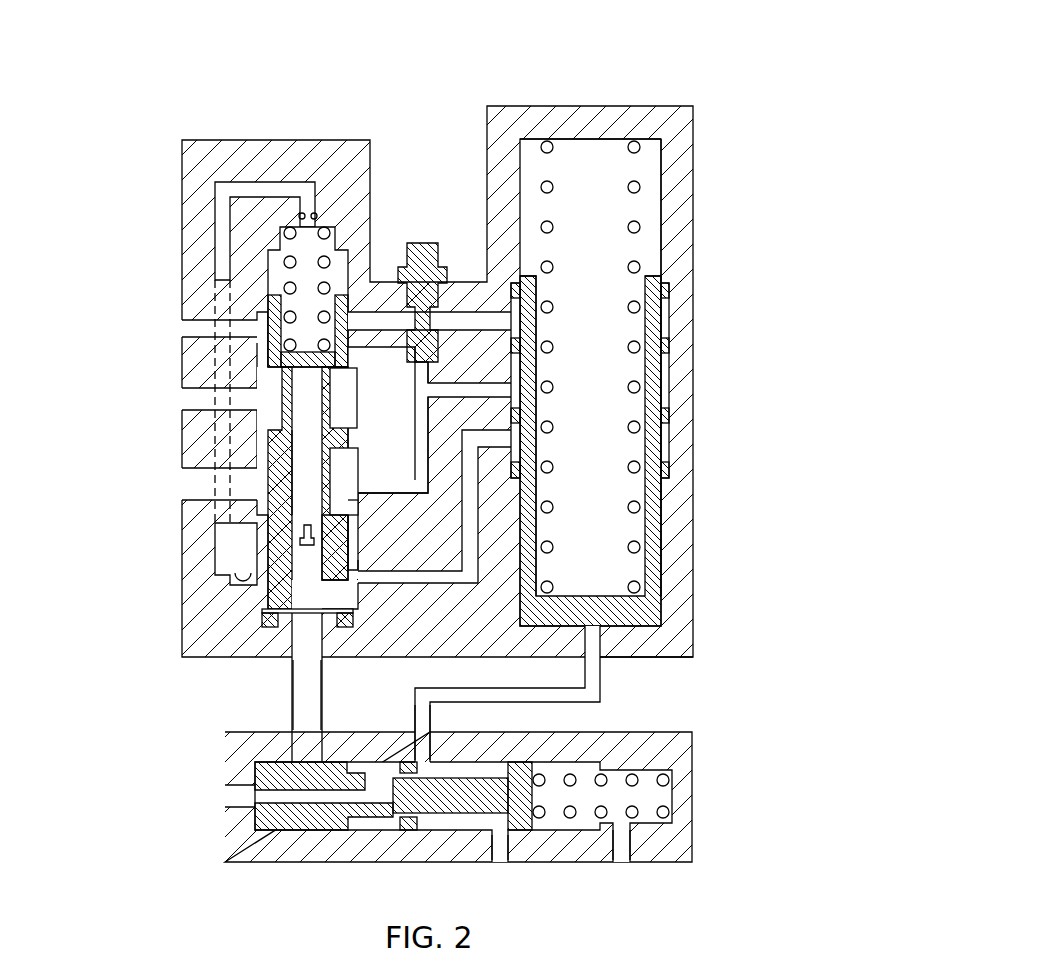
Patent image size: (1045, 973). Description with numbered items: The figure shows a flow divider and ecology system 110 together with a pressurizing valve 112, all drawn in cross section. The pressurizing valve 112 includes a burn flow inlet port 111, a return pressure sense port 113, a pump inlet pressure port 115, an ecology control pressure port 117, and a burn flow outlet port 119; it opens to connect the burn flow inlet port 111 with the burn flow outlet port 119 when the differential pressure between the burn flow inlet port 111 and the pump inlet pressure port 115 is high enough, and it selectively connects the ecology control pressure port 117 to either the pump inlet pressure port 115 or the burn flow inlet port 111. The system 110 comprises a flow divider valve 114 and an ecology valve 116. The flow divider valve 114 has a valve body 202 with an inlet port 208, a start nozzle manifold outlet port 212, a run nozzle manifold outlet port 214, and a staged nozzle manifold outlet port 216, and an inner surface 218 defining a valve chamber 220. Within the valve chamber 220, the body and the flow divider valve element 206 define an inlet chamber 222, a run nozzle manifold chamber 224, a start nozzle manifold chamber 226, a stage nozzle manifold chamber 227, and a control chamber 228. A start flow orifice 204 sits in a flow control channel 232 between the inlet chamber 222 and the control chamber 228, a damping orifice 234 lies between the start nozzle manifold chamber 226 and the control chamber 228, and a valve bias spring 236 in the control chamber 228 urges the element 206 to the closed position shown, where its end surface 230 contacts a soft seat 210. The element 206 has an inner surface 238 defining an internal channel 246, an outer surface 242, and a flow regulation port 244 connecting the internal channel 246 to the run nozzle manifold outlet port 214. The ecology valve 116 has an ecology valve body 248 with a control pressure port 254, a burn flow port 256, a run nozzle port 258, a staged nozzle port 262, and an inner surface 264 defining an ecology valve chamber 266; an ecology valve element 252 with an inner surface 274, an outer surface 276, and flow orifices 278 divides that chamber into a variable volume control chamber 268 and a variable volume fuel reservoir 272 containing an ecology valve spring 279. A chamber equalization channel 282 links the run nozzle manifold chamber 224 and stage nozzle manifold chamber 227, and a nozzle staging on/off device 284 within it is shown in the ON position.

The flow divider and ecology system 110 is at (442, 71).
The burn flow inlet port 111 is at (225, 796).
The pressurizing valve 112 is at (220, 748).
The return pressure sense port 113 is at (622, 862).
The flow divider valve 114 is at (216, 133).
The pump inlet pressure port 115 is at (500, 862).
The ecology valve 116 is at (638, 101).
The ecology control pressure port 117 is at (430, 745).
The burn flow outlet port 119 is at (322, 745).
The valve body 202 is at (182, 190).
The start flow orifice 204 is at (243, 588).
The flow divider valve element 206 is at (348, 447).
The inlet port 208 is at (312, 650).
The soft seat 210 is at (265, 622).
The start nozzle manifold outlet port 212 is at (182, 399).
The run nozzle manifold outlet port 214 is at (182, 484).
The staged nozzle manifold outlet port 216 is at (182, 328).
The inner surface 218 is at (356, 474).
The valve chamber 220 is at (352, 562).
The inlet chamber 222 is at (357, 606).
The run nozzle manifold chamber 224 is at (352, 500).
The start nozzle manifold chamber 226 is at (357, 392).
The stage nozzle manifold chamber 227 is at (258, 322).
The control chamber 228 is at (340, 255).
The end surface 230 is at (340, 625).
The flow control channel 232 is at (215, 548).
The damping orifice 234 is at (313, 215).
The valve bias spring 236 is at (330, 232).
The inner surface 238 is at (297, 475).
The outer surface 242 is at (348, 540).
The flow regulation port 244 is at (300, 540).
The internal channel 246 is at (308, 606).
The ecology valve body 248 is at (640, 204).
The ecology valve element 252 is at (661, 290).
The control pressure port 254 is at (585, 660).
The burn flow port 256 is at (478, 465).
The run nozzle port 258 is at (497, 393).
The staged nozzle port 262 is at (500, 328).
The inner surface 264 is at (660, 240).
The ecology valve chamber 266 is at (662, 182).
The variable volume control chamber 268 is at (628, 640).
The variable volume fuel reservoir 272 is at (607, 528).
The inner surface 274 is at (536, 300).
The outer surface 276 is at (669, 385).
The flow orifices 278 is at (520, 426).
The ecology valve spring 279 is at (553, 348).
The chamber equalization channel 282 is at (418, 417).
The nozzle staging on/off device 284 is at (428, 243).